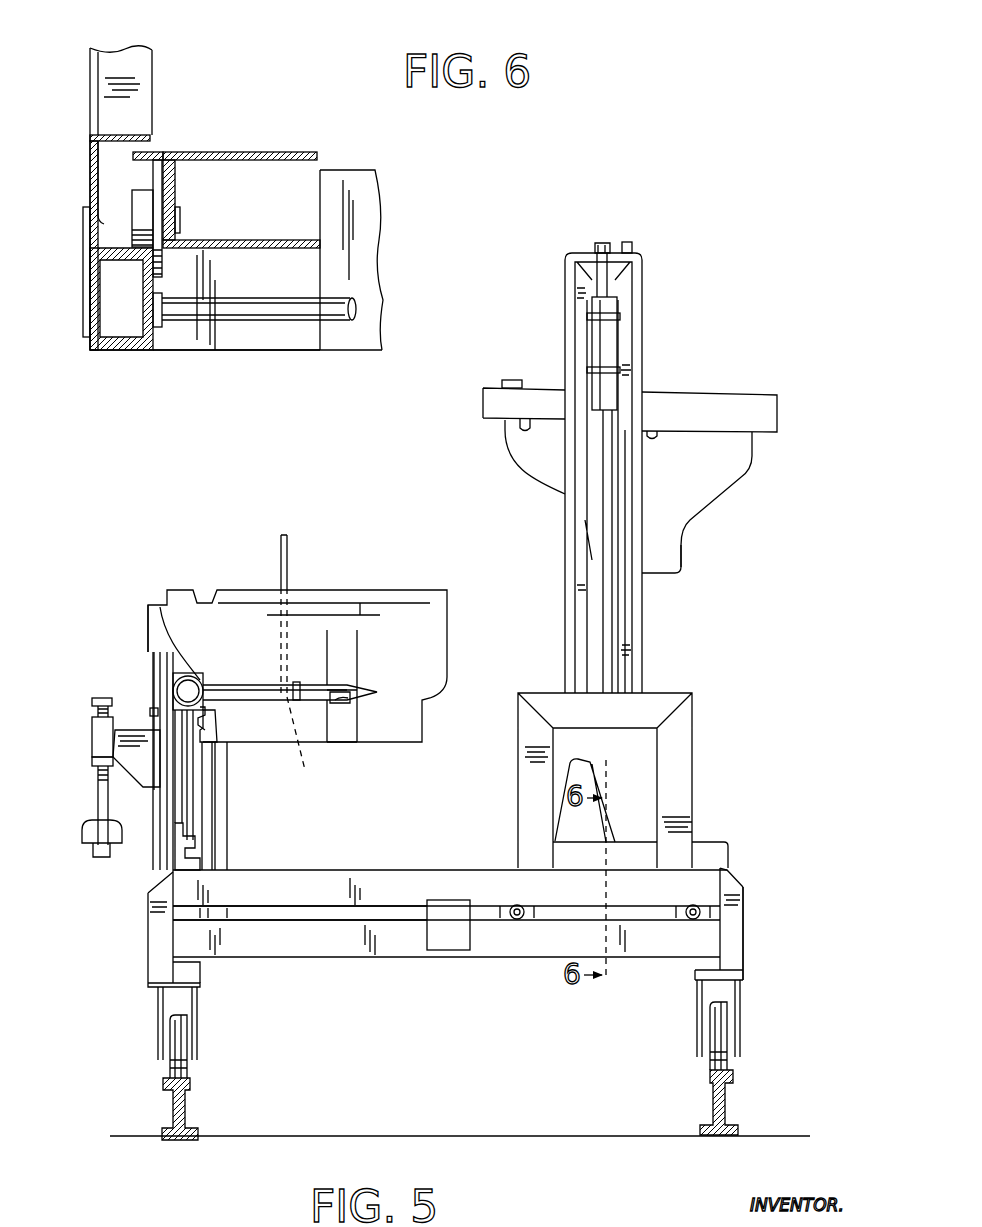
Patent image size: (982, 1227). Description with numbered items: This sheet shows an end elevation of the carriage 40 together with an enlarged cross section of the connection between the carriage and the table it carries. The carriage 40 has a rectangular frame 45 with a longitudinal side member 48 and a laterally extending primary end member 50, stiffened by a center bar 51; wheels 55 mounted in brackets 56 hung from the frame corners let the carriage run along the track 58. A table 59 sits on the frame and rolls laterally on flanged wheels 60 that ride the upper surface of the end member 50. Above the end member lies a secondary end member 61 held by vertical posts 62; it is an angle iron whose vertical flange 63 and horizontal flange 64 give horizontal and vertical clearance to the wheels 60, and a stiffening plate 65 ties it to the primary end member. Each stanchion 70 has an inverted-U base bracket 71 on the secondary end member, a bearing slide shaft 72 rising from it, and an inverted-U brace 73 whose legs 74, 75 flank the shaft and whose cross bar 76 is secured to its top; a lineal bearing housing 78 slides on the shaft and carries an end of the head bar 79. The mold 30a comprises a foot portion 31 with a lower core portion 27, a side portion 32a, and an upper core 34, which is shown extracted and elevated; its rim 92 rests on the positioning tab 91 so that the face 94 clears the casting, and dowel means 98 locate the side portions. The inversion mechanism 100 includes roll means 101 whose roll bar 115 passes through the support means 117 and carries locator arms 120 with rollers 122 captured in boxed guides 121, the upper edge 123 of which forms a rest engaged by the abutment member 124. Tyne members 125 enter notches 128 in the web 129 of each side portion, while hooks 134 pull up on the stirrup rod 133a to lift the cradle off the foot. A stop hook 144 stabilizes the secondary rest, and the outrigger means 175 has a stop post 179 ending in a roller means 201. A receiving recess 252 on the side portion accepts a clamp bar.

In FIG. 5, the lower core portion 27 is at (577, 766).
In FIG. 5, the mold 30a is at (325, 580).
In FIG. 5, the foot portion 31 is at (730, 854).
In FIG. 5, the side portion 32a is at (190, 641).
In FIG. 5, the upper core 34 is at (690, 491).
In FIG. 6, the carriage 40 is at (262, 353).
In FIG. 5, the carriage 40 is at (752, 918).
In FIG. 6, the frame 45 is at (72, 173).
In FIG. 5, the frame 45 is at (330, 951).
In FIG. 6, the side member 48 is at (355, 222).
In FIG. 6, the primary end member 50 is at (120, 346).
In FIG. 5, the primary end member 50 is at (512, 946).
In FIG. 6, the center bar 51 is at (283, 305).
In FIG. 5, the center bar 51 is at (300, 913).
In FIG. 5, the wheel 55 is at (190, 1069).
In FIG. 5, the bracket 56 is at (193, 1026).
In FIG. 5, the track 58 is at (185, 1111).
In FIG. 6, the table 59 is at (250, 150).
In FIG. 5, the table 59 is at (745, 877).
In FIG. 6, the flanged wheel 60 is at (140, 222).
In FIG. 5, the flanged wheel 60 is at (530, 913).
In FIG. 6, the secondary end member 61 is at (85, 133).
In FIG. 5, the secondary end member 61 is at (318, 883).
In FIG. 6, the vertical post 62 is at (135, 175).
In FIG. 5, the vertical post 62 is at (150, 914).
In FIG. 6, the vertical flange 63 is at (92, 186).
In FIG. 6, the horizontal flange 64 is at (130, 140).
In FIG. 6, the stiffening plate 65 is at (83, 305).
In FIG. 5, the stiffening plate 65 is at (443, 940).
In FIG. 5, the stanchion 70 is at (655, 666).
In FIG. 6, the base bracket 71 is at (135, 78).
In FIG. 5, the base bracket 71 is at (677, 758).
In FIG. 5, the bearing slide shaft 72 is at (606, 614).
In FIG. 5, the brace 73 is at (648, 309).
In FIG. 5, the leg 74 is at (574, 533).
In FIG. 5, the leg 75 is at (632, 584).
In FIG. 5, the cross bar 76 is at (582, 251).
In FIG. 5, the lineal bearing housing 78 is at (607, 348).
In FIG. 5, the head bar 79 is at (590, 322).
In FIG. 5, the positioning tab 91 is at (510, 380).
In FIG. 5, the rim 92 is at (490, 386).
In FIG. 5, the face 94 is at (684, 547).
In FIG. 5, the dowel means 98 is at (512, 429).
In FIG. 5, the inversion mechanism 100 is at (160, 561).
In FIG. 5, the roll means 101 is at (135, 671).
In FIG. 5, the roll bar 115 is at (158, 691).
In FIG. 5, the support means 117 is at (140, 656).
In FIG. 5, the locator arm 120 is at (200, 746).
In FIG. 5, the boxed guide 121 is at (197, 863).
In FIG. 5, the roller 122 is at (195, 831).
In FIG. 5, the upper edge 123 is at (175, 826).
In FIG. 5, the abutment member 124 is at (175, 695).
In FIG. 5, the tyne member 125 is at (353, 690).
In FIG. 5, the notch 128 is at (352, 699).
In FIG. 5, the web 129 is at (340, 731).
In FIG. 5, the stirrup rod 133a is at (315, 749).
In FIG. 5, the hook 134 is at (280, 556).
In FIG. 5, the stop hook 144 is at (150, 712).
In FIG. 5, the outrigger means 175 is at (95, 771).
In FIG. 5, the stop post 179 is at (100, 799).
In FIG. 5, the roller means 201 is at (95, 861).
In FIG. 5, the receiving recess 252 is at (206, 719).